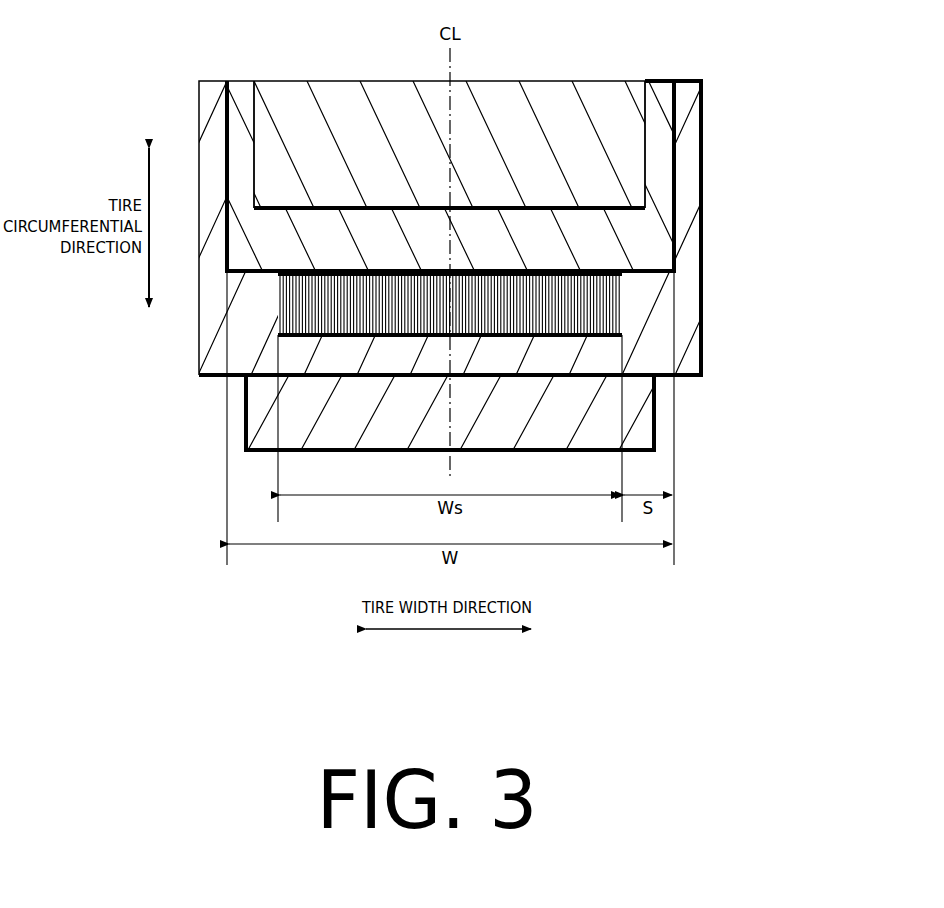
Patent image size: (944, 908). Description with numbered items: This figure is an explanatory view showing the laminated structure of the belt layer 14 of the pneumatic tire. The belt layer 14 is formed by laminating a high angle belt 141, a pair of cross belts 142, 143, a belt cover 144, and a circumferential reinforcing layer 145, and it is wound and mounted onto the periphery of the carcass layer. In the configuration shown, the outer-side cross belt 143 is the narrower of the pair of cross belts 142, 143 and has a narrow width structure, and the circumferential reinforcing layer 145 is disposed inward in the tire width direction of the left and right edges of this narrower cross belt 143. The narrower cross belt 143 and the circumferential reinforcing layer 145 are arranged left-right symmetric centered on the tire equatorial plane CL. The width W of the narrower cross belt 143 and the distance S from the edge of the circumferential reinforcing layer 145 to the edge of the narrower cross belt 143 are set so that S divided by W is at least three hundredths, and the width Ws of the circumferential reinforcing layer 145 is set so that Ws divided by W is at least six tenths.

The belt layer 14 is at (688, 56).
The high angle belt 141 is at (654, 413).
The cross belt 142 is at (701, 349).
The narrower cross belt 143 is at (674, 236).
The belt cover 144 is at (645, 184).
The circumferential reinforcing layer 145 is at (622, 306).